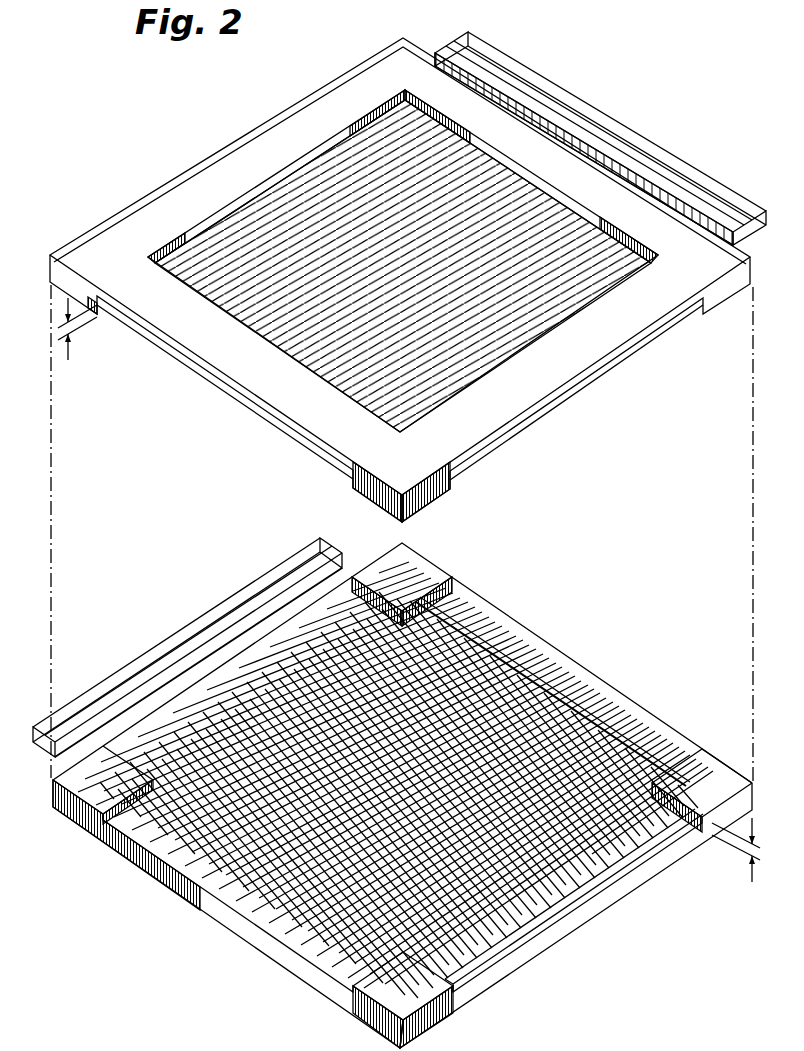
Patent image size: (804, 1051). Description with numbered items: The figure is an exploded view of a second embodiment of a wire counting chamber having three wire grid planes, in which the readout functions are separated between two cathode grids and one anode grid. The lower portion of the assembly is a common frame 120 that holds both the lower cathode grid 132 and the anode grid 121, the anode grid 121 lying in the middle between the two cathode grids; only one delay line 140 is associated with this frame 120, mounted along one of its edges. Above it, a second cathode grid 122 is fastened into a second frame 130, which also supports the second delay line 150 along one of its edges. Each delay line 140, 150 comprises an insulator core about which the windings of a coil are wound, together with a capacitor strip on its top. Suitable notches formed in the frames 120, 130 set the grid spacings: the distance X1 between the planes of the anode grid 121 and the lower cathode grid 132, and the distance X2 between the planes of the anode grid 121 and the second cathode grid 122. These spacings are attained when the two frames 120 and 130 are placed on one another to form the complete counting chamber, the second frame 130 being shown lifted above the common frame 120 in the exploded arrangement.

The frame 120 is at (237, 932).
The anode grid 121 is at (450, 566).
The second cathode grid 122 is at (280, 210).
The second frame 130 is at (561, 403).
The lower cathode grid 132 is at (583, 912).
The delay line 140 is at (186, 616).
The second delay line 150 is at (635, 124).
The distance X1 is at (736, 859).
The distance X2 is at (80, 331).